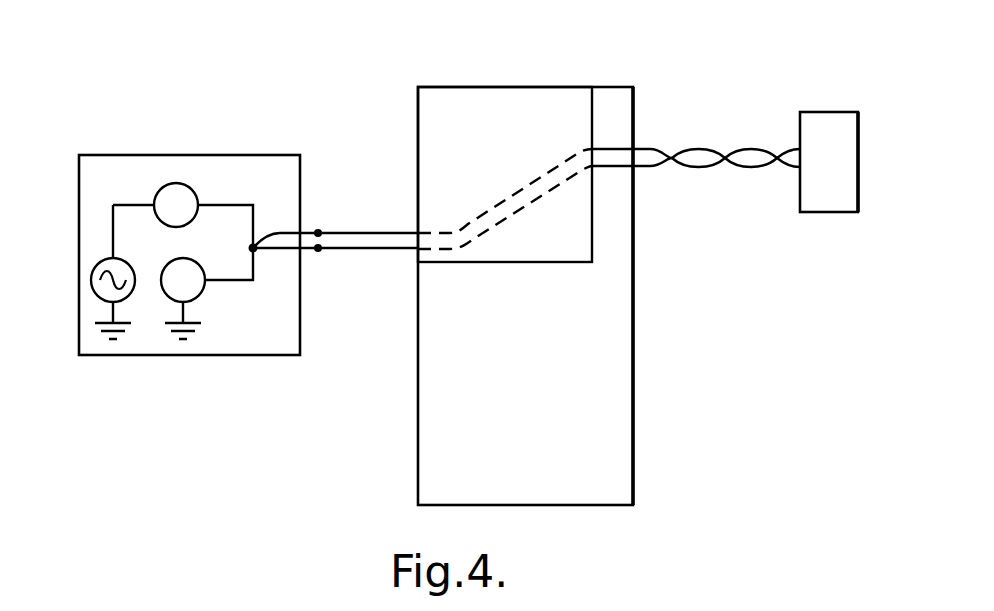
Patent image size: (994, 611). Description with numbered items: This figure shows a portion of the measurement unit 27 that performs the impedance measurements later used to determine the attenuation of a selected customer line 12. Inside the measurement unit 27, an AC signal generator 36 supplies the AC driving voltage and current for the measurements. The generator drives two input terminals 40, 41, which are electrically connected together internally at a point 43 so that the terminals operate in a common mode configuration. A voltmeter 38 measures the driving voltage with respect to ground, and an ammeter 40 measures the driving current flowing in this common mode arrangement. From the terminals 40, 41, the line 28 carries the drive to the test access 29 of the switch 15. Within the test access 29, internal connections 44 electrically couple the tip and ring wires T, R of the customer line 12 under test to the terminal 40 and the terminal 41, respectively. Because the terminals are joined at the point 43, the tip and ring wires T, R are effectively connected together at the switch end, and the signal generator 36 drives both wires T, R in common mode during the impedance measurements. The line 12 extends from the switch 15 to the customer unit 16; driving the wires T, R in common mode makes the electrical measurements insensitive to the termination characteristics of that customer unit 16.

The customer line 12 is at (700, 126).
The switch 15 is at (552, 392).
The customer unit 16 is at (818, 200).
The measurement unit 27 is at (200, 355).
The line 28 is at (360, 212).
The test access 29 is at (523, 144).
The AC signal generator 36 is at (95, 265).
The voltmeter 38 is at (203, 297).
The input terminal 40 is at (170, 183).
The input terminal 41 is at (318, 229).
The point 43 is at (253, 248).
The internal connections 44 is at (519, 217).
The tip wire T is at (757, 148).
The ring wire R is at (755, 167).